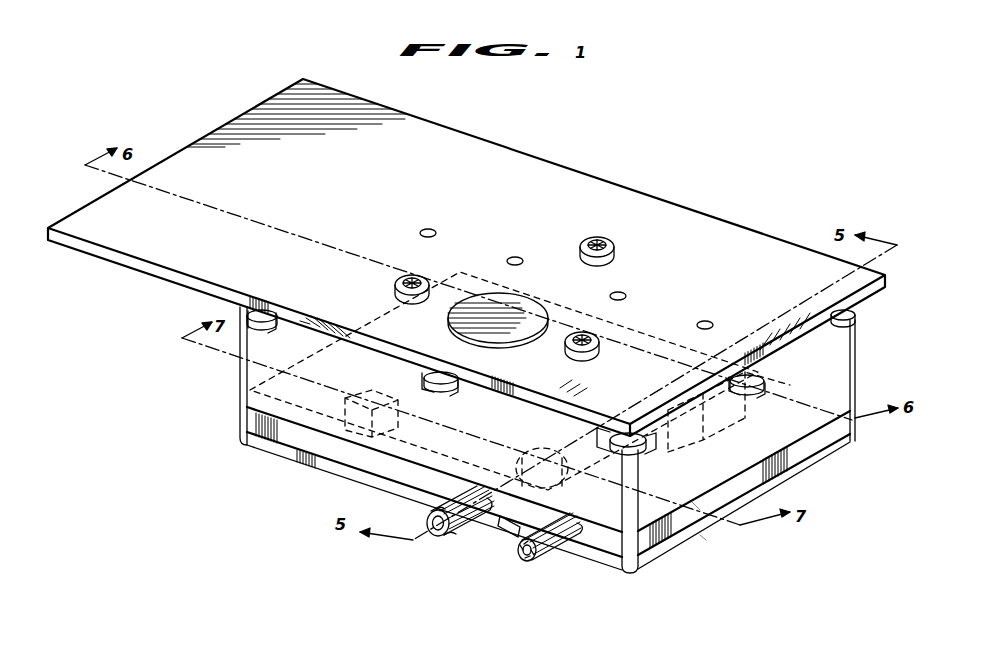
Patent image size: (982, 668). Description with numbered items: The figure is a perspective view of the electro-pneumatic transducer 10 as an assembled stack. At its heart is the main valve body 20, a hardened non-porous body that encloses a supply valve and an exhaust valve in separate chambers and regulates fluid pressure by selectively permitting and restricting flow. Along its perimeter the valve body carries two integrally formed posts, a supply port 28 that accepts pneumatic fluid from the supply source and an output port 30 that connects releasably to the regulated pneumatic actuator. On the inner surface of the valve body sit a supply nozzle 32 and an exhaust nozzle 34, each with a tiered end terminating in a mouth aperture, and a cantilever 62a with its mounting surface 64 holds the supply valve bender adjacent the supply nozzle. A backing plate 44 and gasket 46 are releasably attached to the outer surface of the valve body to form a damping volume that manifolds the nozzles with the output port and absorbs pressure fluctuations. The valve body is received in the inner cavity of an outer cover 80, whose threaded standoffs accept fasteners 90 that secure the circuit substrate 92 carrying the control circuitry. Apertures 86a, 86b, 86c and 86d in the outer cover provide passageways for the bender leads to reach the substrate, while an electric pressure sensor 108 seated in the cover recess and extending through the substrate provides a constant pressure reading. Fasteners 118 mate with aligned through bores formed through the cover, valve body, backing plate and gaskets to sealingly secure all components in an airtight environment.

The electro-pneumatic transducer 10 is at (190, 103).
The main valve body 20 is at (564, 440).
The supply port 28 is at (542, 561).
The output port 30 is at (450, 537).
The supply nozzle 32 is at (500, 530).
The exhaust nozzle 34 is at (344, 448).
The backing plate 44 is at (824, 458).
The gasket 46 is at (798, 474).
The cantilever 62a is at (728, 422).
The mounting surface 64 is at (768, 381).
The outer cover 80 is at (857, 352).
The aperture 86a is at (715, 325).
The aperture 86b is at (628, 296).
The aperture 86c is at (525, 260).
The aperture 86d is at (438, 232).
The fastener 90 is at (611, 255).
The circuit substrate 92 is at (686, 206).
The electric pressure sensor 108 is at (545, 340).
The fastener 118 is at (255, 326).